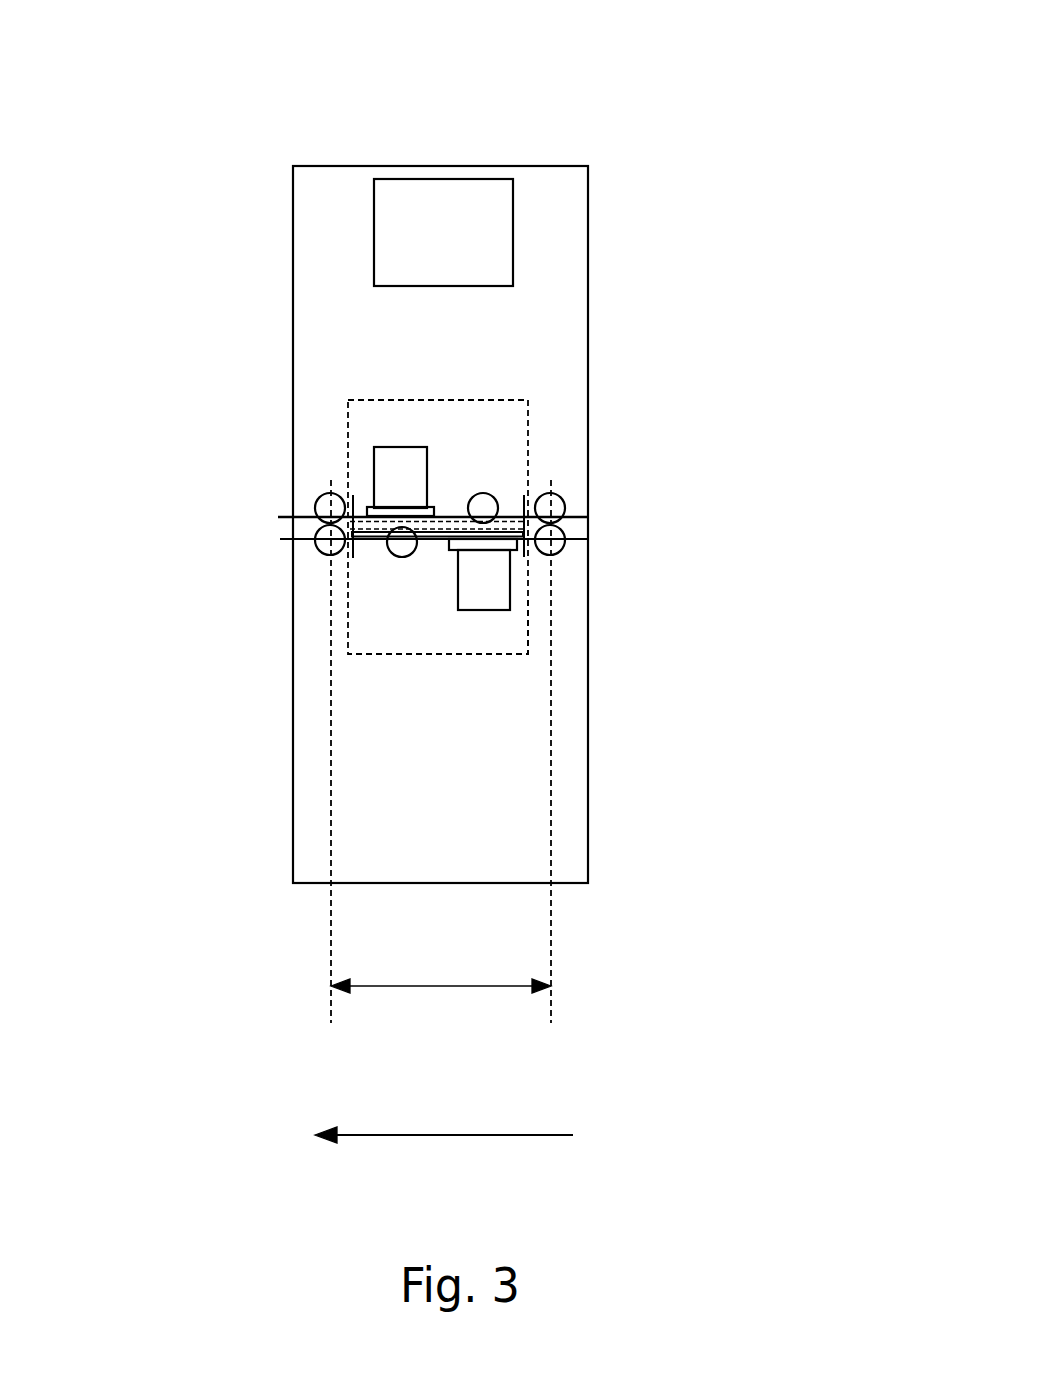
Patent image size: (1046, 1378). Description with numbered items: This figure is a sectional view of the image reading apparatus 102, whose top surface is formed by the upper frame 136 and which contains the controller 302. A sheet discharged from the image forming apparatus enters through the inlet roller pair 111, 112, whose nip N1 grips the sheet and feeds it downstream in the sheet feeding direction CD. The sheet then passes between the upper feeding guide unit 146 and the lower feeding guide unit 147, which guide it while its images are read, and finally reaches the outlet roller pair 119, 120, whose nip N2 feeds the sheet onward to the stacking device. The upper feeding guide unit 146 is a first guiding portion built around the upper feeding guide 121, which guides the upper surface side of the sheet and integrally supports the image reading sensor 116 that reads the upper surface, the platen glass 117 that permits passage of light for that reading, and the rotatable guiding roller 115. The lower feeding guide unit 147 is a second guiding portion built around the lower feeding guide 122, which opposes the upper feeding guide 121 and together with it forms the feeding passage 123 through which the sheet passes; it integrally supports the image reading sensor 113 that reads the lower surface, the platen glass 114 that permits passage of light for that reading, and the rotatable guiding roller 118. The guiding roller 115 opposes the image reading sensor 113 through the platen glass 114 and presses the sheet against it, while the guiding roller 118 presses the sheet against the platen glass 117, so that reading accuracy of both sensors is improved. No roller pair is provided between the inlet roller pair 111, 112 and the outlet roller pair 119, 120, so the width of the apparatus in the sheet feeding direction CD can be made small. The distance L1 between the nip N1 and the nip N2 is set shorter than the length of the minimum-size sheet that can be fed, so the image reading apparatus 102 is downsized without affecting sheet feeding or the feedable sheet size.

The image reading apparatus 102 is at (453, 164).
The upper frame 136 is at (347, 165).
The controller 302 is at (473, 253).
The upper feeding guide unit 146 is at (512, 392).
The lower feeding guide unit 147 is at (522, 657).
The image reading sensor 116 is at (392, 455).
The platen glass 117 is at (409, 512).
The guiding roller 115 is at (486, 504).
The upper feeding guide 121 is at (507, 514).
The feeding passage 123 is at (575, 525).
The lower feeding guide 122 is at (362, 540).
The guiding roller 118 is at (401, 552).
The platen glass 114 is at (480, 547).
The image reading sensor 113 is at (482, 598).
The inlet roller 111 is at (564, 501).
The inlet roller 112 is at (557, 552).
The nip N1 is at (565, 521).
The outlet roller 119 is at (328, 498).
The outlet roller 120 is at (328, 556).
The nip N2 is at (313, 520).
The distance L1 is at (466, 988).
The sheet feeding direction CD is at (444, 1157).